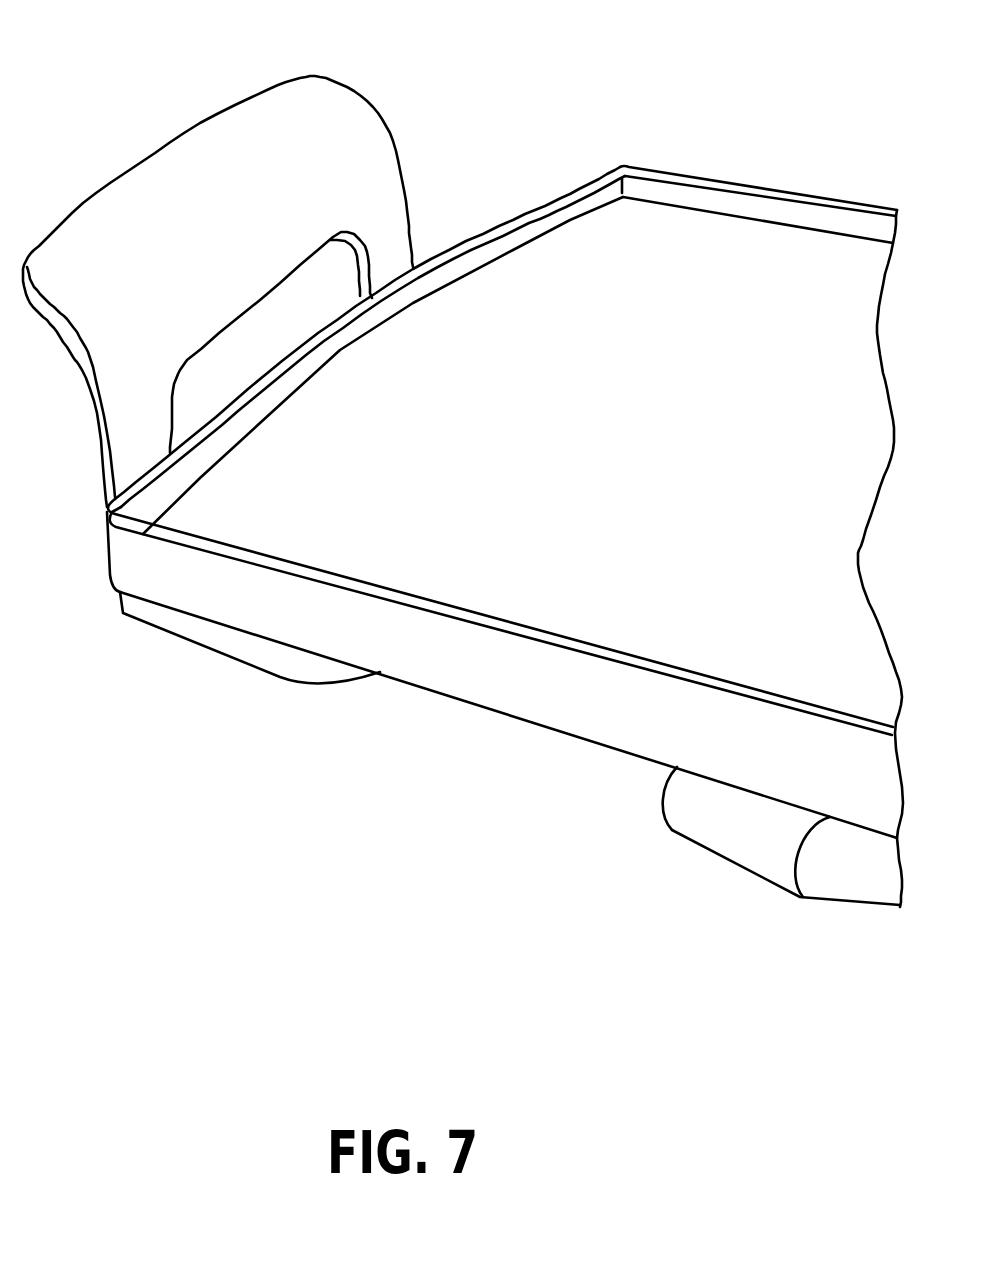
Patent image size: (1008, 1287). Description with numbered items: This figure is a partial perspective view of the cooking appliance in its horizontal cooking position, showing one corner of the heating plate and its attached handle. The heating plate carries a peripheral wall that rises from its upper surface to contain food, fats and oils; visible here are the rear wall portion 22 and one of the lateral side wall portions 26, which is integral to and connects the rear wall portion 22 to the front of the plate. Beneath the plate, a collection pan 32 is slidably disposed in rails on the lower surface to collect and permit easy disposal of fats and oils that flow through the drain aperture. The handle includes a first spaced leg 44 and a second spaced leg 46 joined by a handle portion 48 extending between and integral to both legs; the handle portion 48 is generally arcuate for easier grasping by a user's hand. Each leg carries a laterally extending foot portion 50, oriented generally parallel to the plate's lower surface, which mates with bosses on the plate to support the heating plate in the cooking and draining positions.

The rear wall portion 22 is at (754, 197).
The lateral side wall portion 26 is at (527, 207).
The collection pan 32 is at (708, 848).
The first spaced leg 44 is at (98, 418).
The second spaced leg 46 is at (410, 237).
The handle portion 48 is at (145, 163).
The foot portion 50 is at (255, 650).